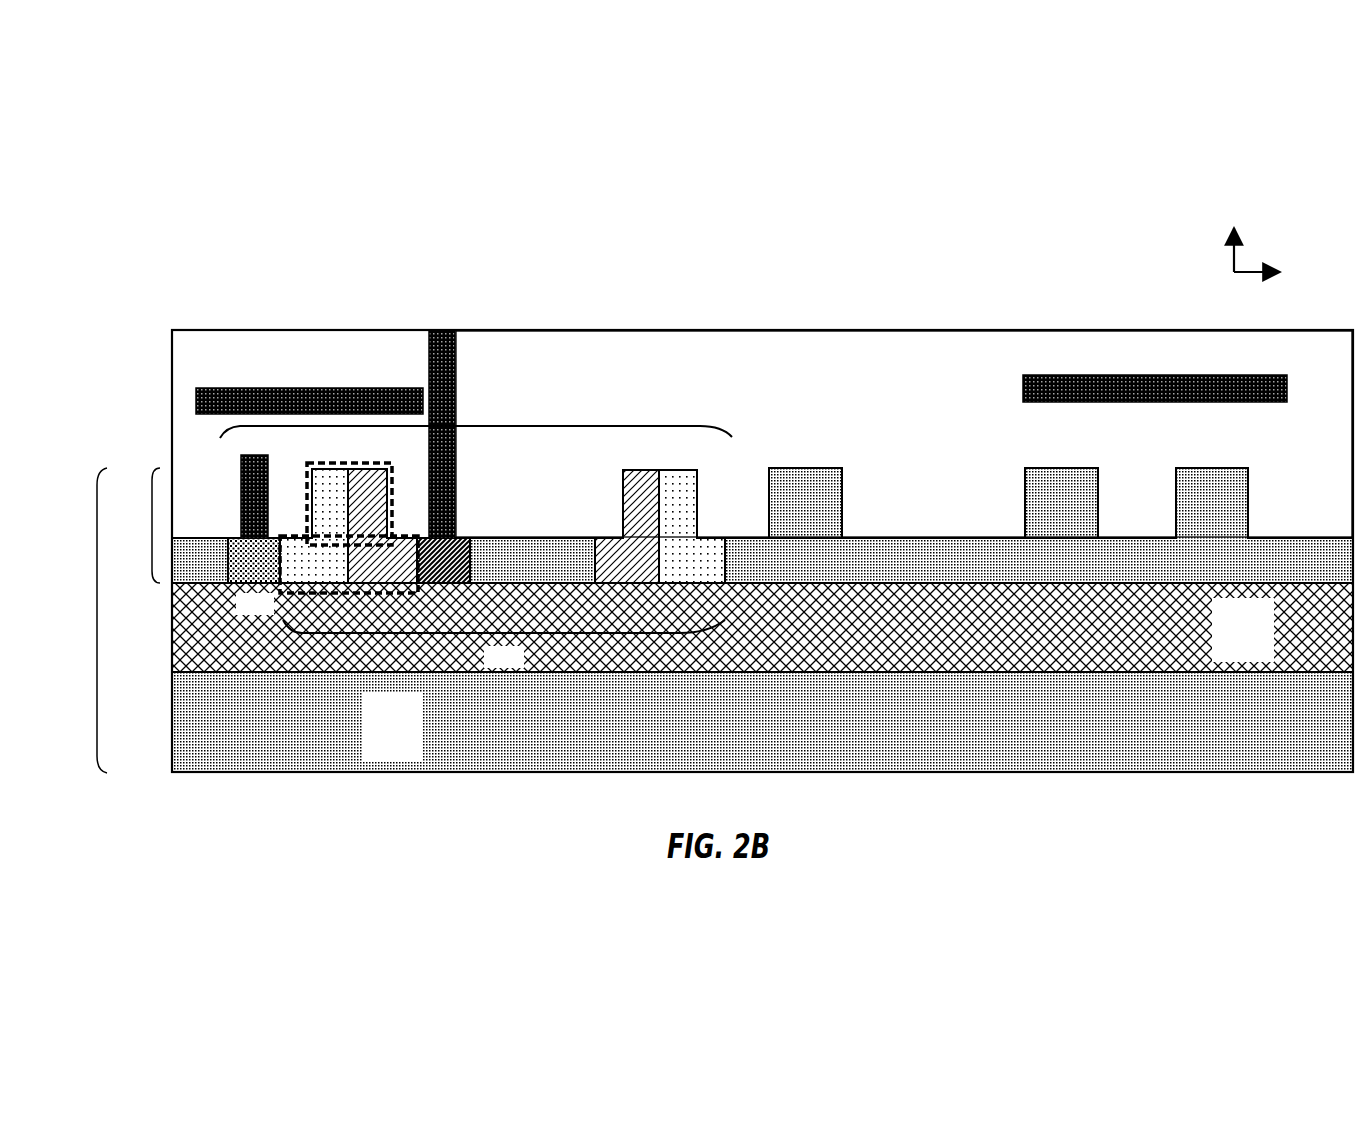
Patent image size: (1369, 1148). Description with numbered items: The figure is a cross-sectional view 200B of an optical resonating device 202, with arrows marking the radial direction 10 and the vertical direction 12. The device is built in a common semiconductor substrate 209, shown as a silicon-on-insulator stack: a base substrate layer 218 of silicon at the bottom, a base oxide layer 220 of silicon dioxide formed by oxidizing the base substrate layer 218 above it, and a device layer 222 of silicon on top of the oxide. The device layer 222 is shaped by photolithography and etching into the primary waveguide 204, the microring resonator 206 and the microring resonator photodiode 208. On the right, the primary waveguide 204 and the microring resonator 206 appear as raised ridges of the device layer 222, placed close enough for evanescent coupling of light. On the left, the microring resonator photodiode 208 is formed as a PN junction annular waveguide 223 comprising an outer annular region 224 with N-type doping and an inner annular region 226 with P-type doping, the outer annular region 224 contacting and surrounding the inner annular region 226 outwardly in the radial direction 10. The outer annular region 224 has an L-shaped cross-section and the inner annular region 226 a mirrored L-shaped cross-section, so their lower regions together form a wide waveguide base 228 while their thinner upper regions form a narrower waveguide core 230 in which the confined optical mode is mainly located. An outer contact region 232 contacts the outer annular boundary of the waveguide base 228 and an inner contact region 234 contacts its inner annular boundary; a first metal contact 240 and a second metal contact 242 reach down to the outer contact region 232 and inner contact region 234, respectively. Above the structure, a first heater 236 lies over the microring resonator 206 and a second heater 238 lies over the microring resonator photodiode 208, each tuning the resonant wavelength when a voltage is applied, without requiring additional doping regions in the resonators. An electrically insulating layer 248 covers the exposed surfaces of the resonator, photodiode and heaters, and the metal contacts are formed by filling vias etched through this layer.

The cross-sectional view 200B is at (990, 185).
The optical resonating device 202 is at (583, 327).
The primary waveguide 204 is at (1232, 512).
The microring resonator 206 is at (1042, 507).
The microring resonator photodiode 208 is at (475, 426).
The semiconductor substrate 209 is at (94, 621).
The radial direction 10 is at (1248, 272).
The vertical direction 12 is at (1240, 238).
The base substrate layer 218 is at (398, 761).
The base oxide layer 220 is at (1258, 660).
The device layer 222 is at (150, 523).
The PN junction annular waveguide 223 is at (505, 633).
The outer annular region 224 is at (675, 478).
The inner annular region 226 is at (640, 475).
The waveguide base 228 is at (298, 593).
The waveguide core 230 is at (357, 463).
The outer contact region 232 is at (240, 553).
The inner contact region 234 is at (462, 538).
The first heater 236 is at (1175, 373).
The second heater 238 is at (283, 388).
The first metal contact 240 is at (240, 462).
The second metal contact 242 is at (455, 487).
The electrically insulating layer 248 is at (850, 401).